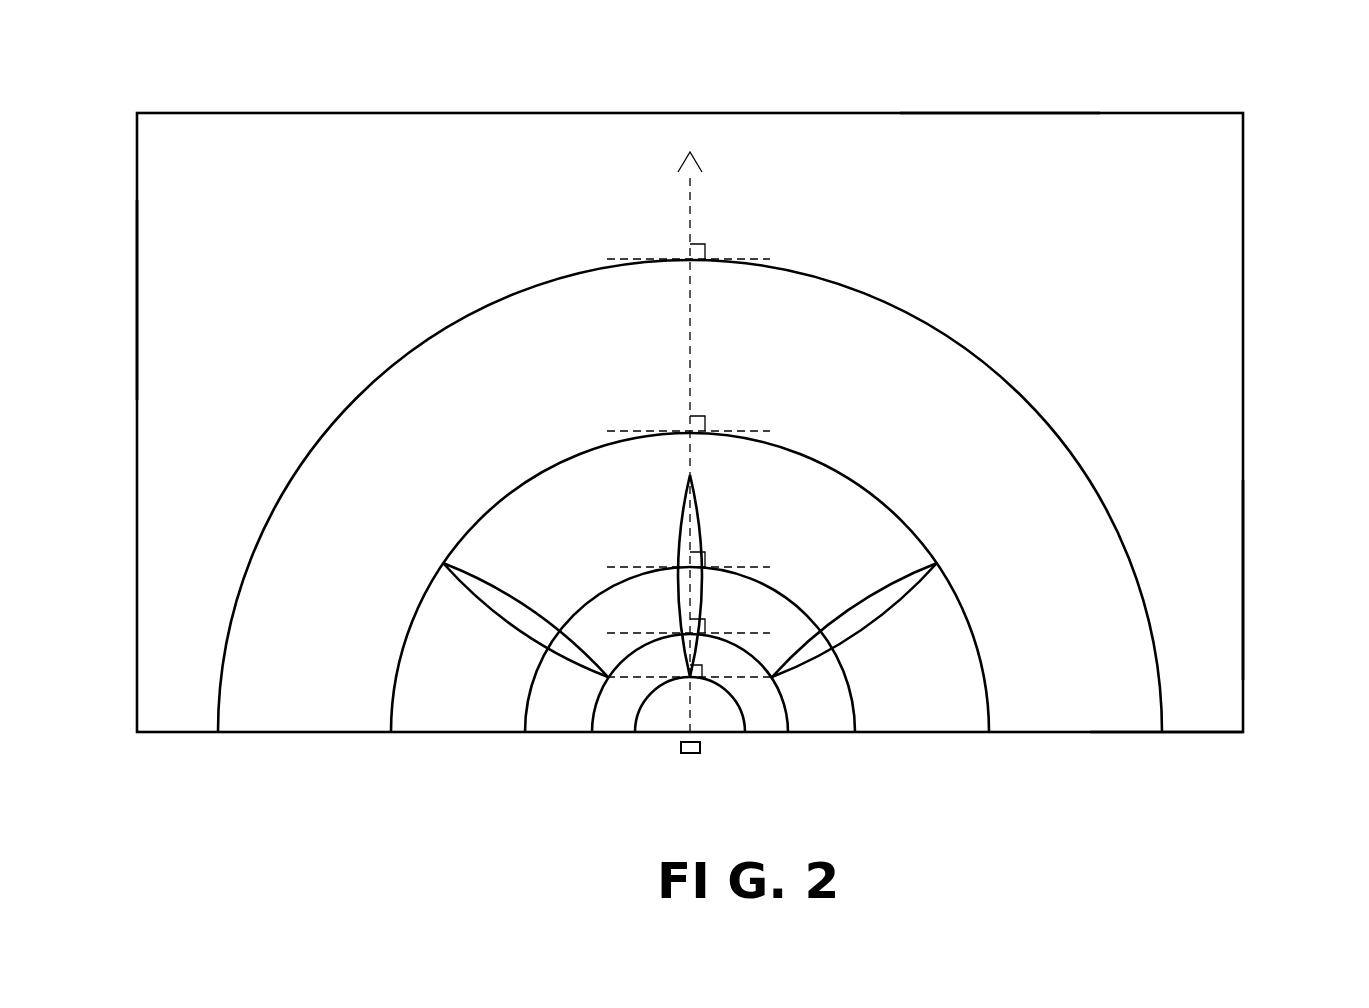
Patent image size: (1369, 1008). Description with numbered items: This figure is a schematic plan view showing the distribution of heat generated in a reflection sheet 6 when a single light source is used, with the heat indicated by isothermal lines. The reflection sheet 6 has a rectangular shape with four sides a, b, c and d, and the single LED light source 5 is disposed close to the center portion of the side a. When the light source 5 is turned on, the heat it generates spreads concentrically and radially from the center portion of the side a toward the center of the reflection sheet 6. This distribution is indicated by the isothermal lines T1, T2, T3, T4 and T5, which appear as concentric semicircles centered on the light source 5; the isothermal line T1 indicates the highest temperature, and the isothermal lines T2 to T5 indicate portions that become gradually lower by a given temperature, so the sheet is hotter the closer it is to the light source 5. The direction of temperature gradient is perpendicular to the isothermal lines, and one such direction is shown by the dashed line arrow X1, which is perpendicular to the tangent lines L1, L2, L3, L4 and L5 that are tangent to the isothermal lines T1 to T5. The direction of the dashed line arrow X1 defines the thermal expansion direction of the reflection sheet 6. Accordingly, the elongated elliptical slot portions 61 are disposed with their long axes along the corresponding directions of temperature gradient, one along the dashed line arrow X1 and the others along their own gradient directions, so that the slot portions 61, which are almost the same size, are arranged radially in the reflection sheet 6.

The light source 5 is at (690, 756).
The reflection sheet 6 is at (1245, 233).
The slot portion 61 is at (680, 500).
The side a is at (1090, 734).
The side b is at (1004, 111).
The side c is at (1245, 580).
The side d is at (136, 300).
The dashed line arrow X1 is at (693, 305).
The isothermal line T1 is at (634, 716).
The isothermal line T2 is at (591, 716).
The isothermal line T3 is at (524, 716).
The isothermal line T4 is at (390, 716).
The isothermal line T5 is at (217, 716).
The tangent line L1 is at (713, 700).
The tangent line L2 is at (727, 633).
The tangent line L3 is at (748, 567).
The tangent line L4 is at (748, 431).
The tangent line L5 is at (748, 259).